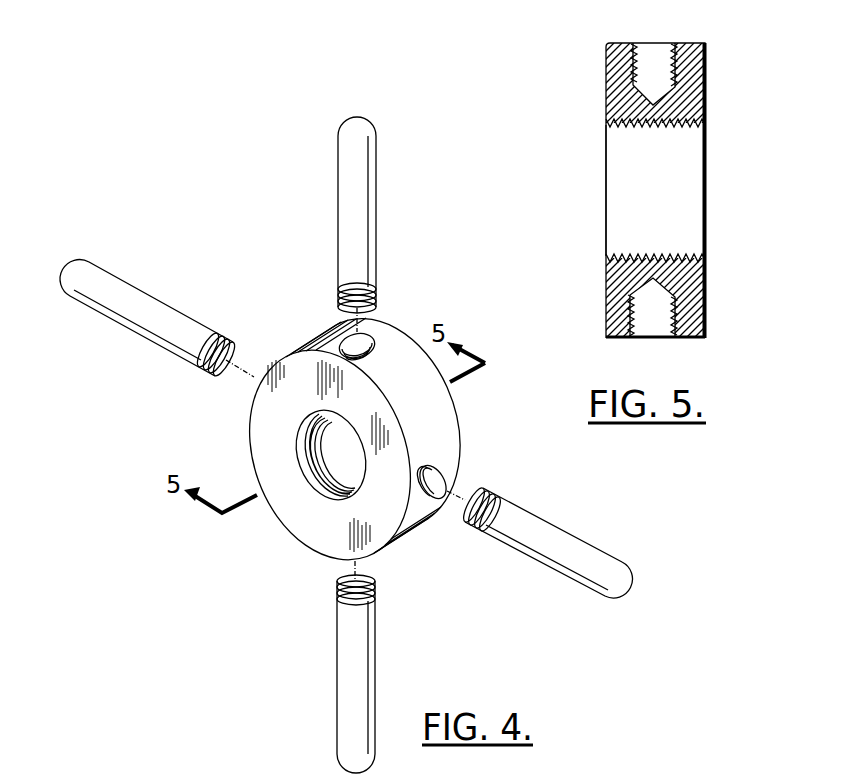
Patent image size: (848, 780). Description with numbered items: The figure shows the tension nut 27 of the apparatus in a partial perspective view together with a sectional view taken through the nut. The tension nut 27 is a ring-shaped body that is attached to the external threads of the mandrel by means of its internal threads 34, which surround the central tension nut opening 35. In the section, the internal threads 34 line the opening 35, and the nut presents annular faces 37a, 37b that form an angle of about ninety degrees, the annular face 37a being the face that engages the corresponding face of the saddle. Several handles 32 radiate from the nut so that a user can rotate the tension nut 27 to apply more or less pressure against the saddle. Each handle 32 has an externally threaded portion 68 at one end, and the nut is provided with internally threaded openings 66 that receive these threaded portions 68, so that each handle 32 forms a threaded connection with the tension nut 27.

In FIG. 4, the tension nut 27 is at (273, 481).
In FIG. 5, the tension nut 27 is at (705, 88).
In FIG. 4, the handles 32 is at (350, 177).
In FIG. 4, the internal threads 34 is at (310, 443).
In FIG. 5, the internal threads 34 is at (650, 126).
In FIG. 4, the tension nut opening 35 is at (338, 470).
In FIG. 5, the tension nut opening 35 is at (605, 150).
In FIG. 5, the annular face 37a is at (703, 118).
In FIG. 5, the annular face 37b is at (690, 43).
In FIG. 4, the internally threaded opening 66 is at (373, 342).
In FIG. 5, the internally threaded opening 66 is at (652, 43).
In FIG. 4, the externally threaded portion 68 is at (373, 293).